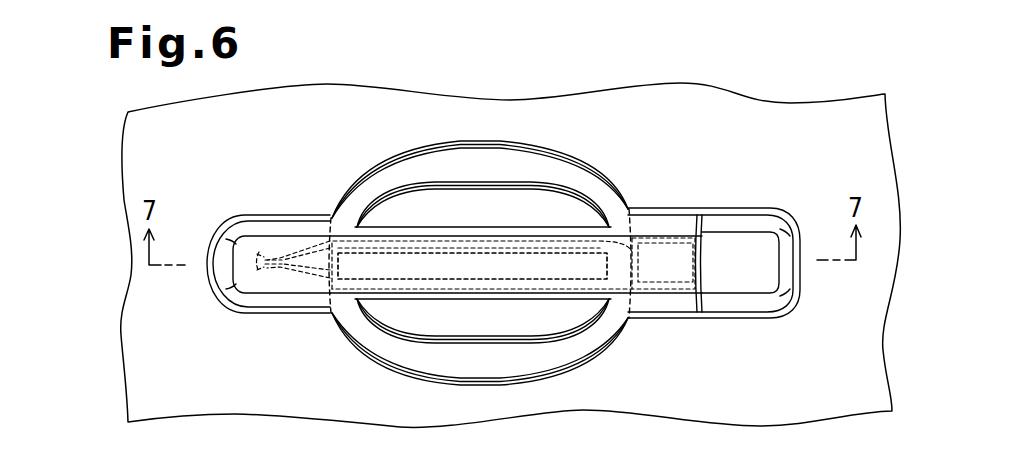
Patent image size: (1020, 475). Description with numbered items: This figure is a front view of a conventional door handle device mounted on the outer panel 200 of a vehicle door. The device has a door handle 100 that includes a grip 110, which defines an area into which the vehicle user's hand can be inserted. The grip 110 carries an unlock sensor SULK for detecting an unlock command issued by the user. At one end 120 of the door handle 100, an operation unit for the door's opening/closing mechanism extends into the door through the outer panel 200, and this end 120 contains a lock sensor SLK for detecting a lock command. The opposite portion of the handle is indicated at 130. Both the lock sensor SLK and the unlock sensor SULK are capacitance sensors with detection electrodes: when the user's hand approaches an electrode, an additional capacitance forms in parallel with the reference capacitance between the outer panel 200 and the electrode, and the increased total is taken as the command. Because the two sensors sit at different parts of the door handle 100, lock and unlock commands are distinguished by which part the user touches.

The door handle 100 is at (553, 222).
The grip 110 is at (433, 225).
The end of the door handle 120 is at (666, 303).
The handle grip end 130 is at (285, 301).
The outer panel 200 is at (812, 122).
The lock sensor SLK is at (662, 245).
The unlock sensor SULK is at (563, 281).